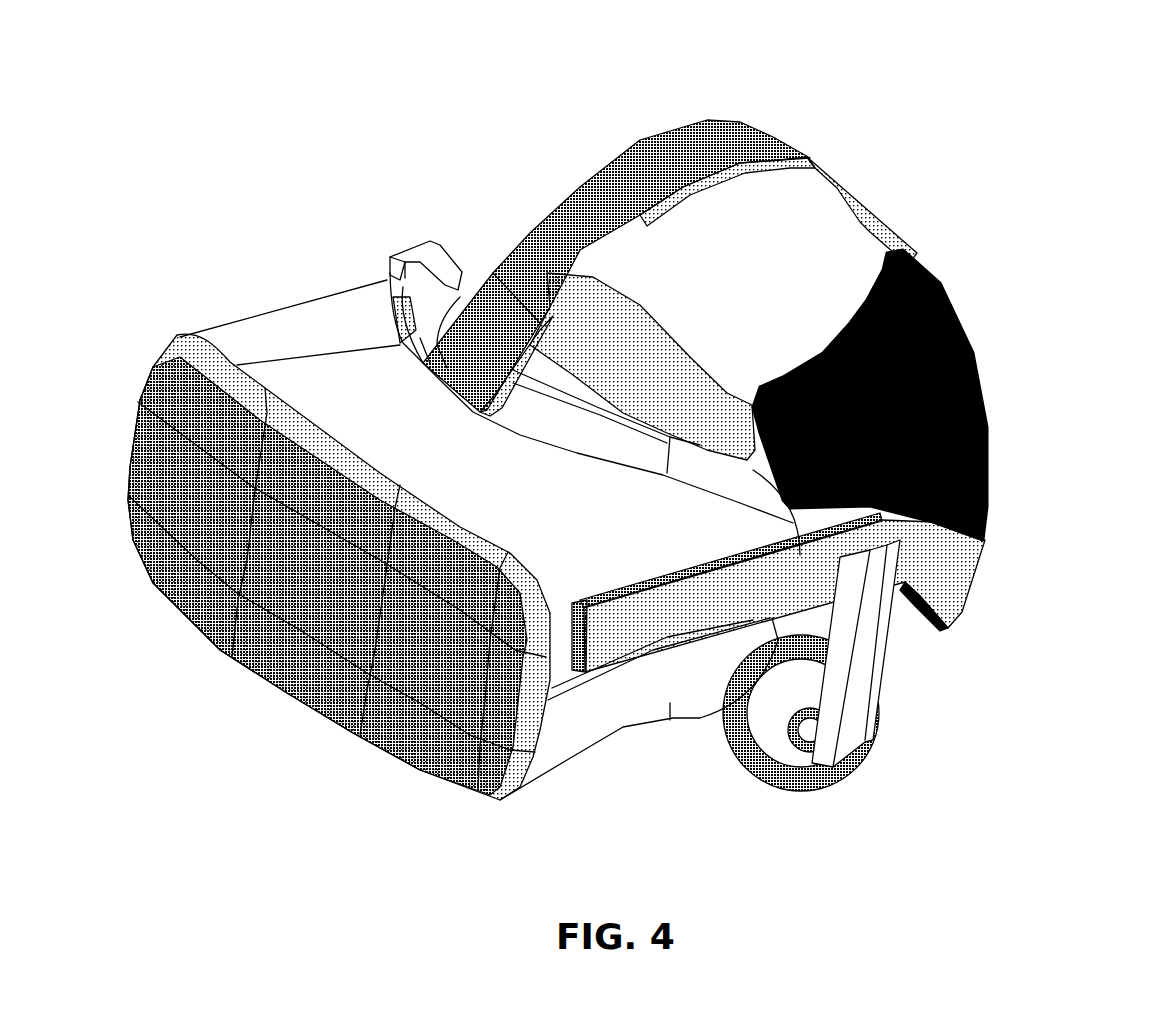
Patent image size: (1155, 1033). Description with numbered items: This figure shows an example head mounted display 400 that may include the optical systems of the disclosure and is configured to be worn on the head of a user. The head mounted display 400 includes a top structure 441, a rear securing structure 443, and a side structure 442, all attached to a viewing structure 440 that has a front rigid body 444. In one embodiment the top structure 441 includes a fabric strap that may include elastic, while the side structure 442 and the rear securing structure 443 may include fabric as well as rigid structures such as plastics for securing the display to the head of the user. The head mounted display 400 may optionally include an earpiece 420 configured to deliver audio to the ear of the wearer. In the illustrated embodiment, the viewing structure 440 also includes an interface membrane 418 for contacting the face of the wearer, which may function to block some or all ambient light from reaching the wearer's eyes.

The head mounted display 400 is at (1112, 54).
The interface membrane 418 is at (457, 267).
The earpiece 420 is at (873, 762).
The viewing structure 440 is at (358, 339).
The top structure 441 is at (777, 137).
The side structure 442 is at (660, 320).
The rear securing structure 443 is at (970, 340).
The front rigid body 444 is at (328, 602).